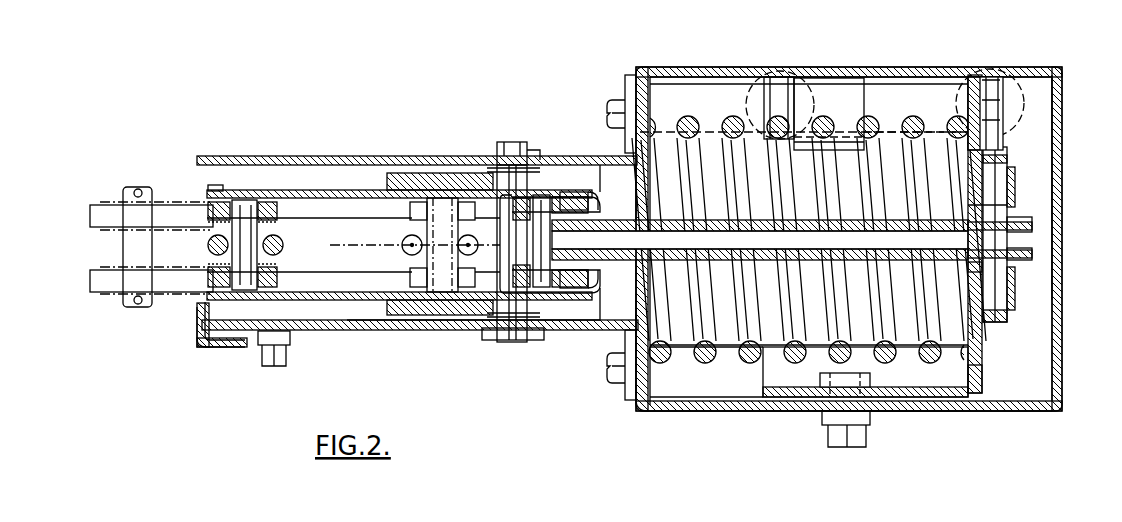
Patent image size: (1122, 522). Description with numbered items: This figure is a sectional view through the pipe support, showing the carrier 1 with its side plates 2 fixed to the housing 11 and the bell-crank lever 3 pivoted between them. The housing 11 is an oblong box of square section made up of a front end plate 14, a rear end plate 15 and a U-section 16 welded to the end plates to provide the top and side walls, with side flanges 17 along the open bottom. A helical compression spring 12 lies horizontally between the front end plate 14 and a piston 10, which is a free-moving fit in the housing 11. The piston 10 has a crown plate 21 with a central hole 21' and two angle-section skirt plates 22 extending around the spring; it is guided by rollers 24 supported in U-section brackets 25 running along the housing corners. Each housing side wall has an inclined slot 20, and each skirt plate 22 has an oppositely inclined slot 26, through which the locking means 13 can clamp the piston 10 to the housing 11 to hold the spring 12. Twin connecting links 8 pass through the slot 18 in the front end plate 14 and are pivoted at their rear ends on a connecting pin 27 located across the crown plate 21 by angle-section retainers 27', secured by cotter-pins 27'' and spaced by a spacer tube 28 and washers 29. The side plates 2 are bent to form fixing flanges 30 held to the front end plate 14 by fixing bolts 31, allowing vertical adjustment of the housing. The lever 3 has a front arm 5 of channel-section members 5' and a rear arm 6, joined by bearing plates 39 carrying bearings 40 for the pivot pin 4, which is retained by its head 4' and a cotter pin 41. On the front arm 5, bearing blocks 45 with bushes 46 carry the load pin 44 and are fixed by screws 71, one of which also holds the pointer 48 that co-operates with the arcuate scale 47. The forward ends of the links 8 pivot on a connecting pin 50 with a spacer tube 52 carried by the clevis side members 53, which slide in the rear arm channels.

The carrier 1 is at (383, 154).
The side plates 2 is at (360, 157).
The bell-crank lever 3 is at (356, 331).
The pivot pin 4 is at (511, 214).
The head 4' is at (513, 357).
The front arm 5 is at (399, 202).
The channel-section members 5' is at (353, 245).
The rear arm 6 is at (566, 195).
The connecting links 8 is at (776, 232).
The piston 10 is at (985, 376).
The housing 11 is at (1005, 412).
The helical compression spring 12 is at (703, 364).
The locking means 13 is at (893, 418).
The front end plate 14 is at (640, 406).
The rear end plate 15 is at (1052, 338).
The U-section 16 is at (1048, 411).
The side flanges 17 is at (672, 92).
The slot 18 is at (650, 216).
The slot 20 is at (818, 411).
The crown plate 21 is at (1035, 234).
The central hole 21' is at (941, 283).
The skirt plates 22 is at (825, 90).
The rollers 24 is at (776, 100).
The U-section brackets 25 is at (886, 97).
The slot 26 is at (818, 390).
The connecting pin 27 is at (1046, 234).
The angle-section retainers 27' is at (1061, 238).
The cotter-pins 27'' is at (956, 241).
The spacer tube 28 is at (1032, 240).
The washers 29 is at (968, 210).
The fixing flange 30 is at (626, 85).
The fixing bolts 31 is at (610, 108).
The bearing plates 39 is at (428, 176).
The bearings 40 is at (493, 160).
The cotter pin 41 is at (538, 146).
The load pin 44 is at (240, 208).
The bearing blocks 45 is at (267, 204).
The bushes 46 is at (278, 270).
The arcuate scale 47 is at (250, 356).
The pointer 48 is at (222, 343).
The connecting pin 50 is at (545, 285).
The spacer tube 52 is at (598, 290).
The side members 53 is at (598, 192).
The screws 71 is at (212, 188).